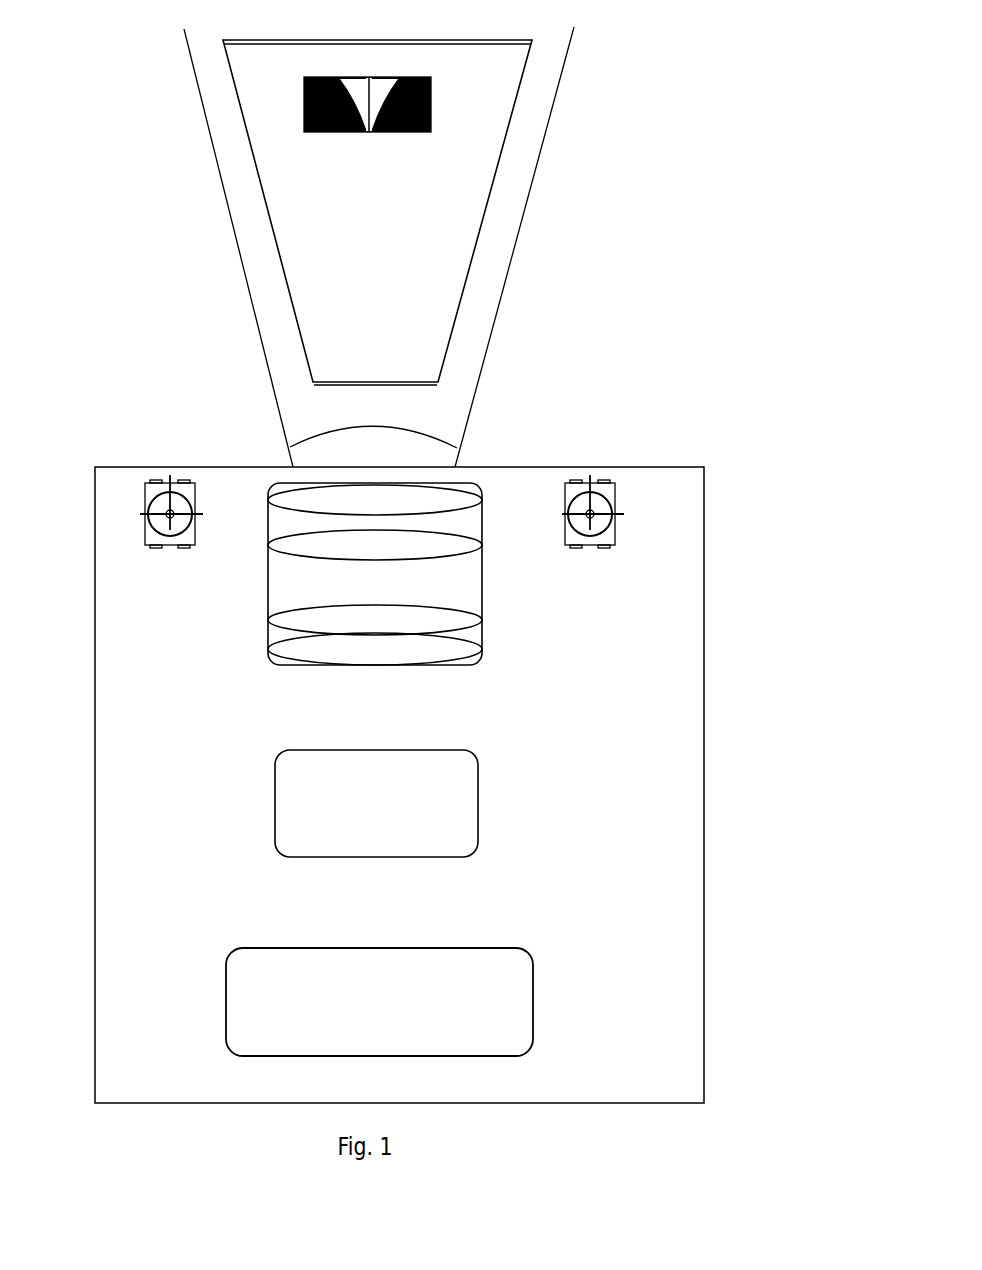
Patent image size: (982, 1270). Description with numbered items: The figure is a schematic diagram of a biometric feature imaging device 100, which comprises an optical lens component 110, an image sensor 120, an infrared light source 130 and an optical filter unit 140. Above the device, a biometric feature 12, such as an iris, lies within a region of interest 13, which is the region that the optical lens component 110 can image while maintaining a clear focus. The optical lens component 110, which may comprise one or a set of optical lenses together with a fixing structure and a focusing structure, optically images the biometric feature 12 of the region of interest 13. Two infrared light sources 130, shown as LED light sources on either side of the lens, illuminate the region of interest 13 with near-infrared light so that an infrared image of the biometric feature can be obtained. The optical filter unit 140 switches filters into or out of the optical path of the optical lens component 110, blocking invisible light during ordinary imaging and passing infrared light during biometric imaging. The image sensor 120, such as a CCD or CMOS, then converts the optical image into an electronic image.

The biometric feature 12 is at (292, 106).
The region of interest 13 is at (503, 133).
The biometric feature imaging device 100 is at (704, 637).
The optical lens component 110 is at (376, 591).
The image sensor 120 is at (379, 1002).
The infrared light source 130 is at (378, 543).
The optical filter unit 140 is at (376, 803).